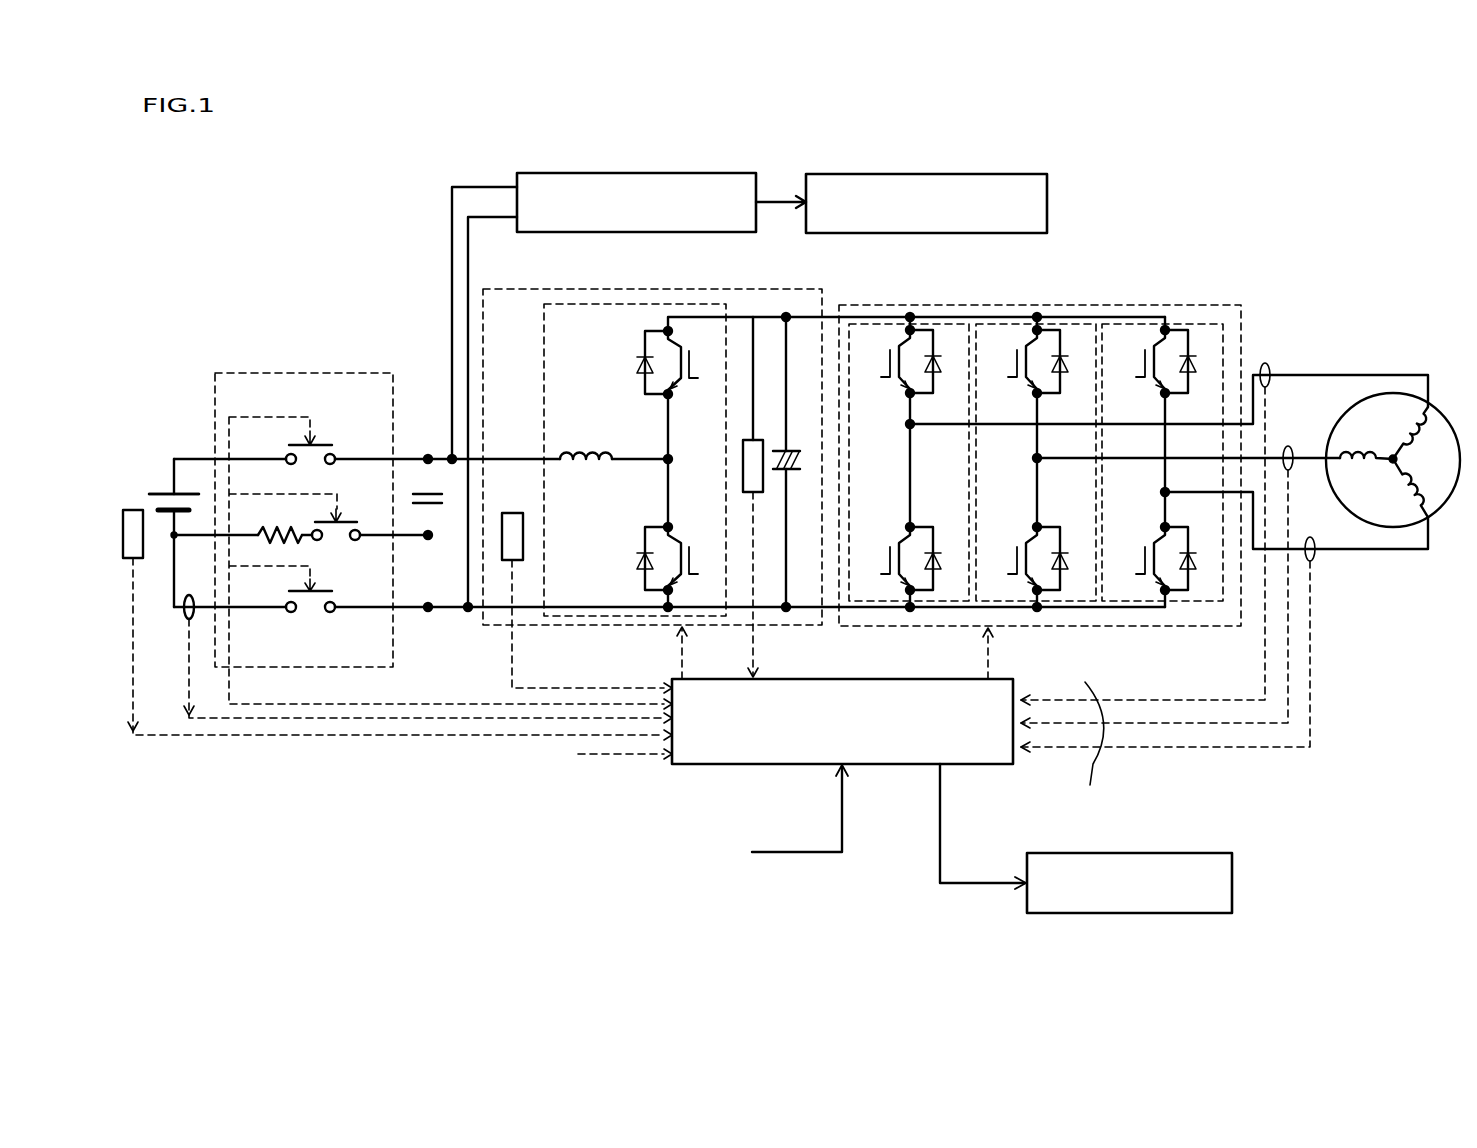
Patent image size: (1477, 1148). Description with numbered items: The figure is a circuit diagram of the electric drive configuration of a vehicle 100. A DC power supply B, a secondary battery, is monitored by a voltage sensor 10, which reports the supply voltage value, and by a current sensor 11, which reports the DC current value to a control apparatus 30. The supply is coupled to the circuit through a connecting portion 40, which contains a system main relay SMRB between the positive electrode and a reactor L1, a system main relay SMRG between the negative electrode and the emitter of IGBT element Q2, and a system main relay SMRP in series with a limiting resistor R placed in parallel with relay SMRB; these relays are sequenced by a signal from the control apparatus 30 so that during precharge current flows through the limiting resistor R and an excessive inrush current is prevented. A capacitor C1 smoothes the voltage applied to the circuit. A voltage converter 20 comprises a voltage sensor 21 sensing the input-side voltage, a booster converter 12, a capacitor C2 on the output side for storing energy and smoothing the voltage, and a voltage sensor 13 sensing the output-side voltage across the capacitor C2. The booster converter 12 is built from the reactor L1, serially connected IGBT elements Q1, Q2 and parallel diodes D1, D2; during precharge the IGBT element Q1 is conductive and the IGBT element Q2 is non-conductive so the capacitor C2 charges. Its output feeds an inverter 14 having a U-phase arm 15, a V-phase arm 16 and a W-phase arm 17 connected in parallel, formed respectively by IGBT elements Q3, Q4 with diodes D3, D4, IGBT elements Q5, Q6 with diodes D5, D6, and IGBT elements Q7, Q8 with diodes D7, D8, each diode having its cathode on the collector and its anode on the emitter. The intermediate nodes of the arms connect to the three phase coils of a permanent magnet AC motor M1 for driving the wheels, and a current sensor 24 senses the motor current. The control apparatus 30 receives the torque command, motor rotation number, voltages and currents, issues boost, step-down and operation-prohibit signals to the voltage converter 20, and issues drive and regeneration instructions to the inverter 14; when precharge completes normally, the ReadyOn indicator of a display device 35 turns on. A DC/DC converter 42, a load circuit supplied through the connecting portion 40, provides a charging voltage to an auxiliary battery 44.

The voltage sensor 10 is at (133, 510).
The current sensor 11 is at (189, 595).
The booster converter 12 is at (544, 337).
The voltage sensor 13 is at (753, 440).
The inverter 14 is at (873, 305).
The U-phase arm 15 is at (945, 324).
The V-phase arm 16 is at (1070, 324).
The W-phase arm 17 is at (1198, 324).
The voltage converter 20 is at (503, 289).
The voltage sensor 21 is at (512, 513).
The current sensor 24 is at (1265, 363).
The control apparatus 30 is at (752, 764).
The display device 35 is at (1200, 853).
The connecting portion 40 is at (283, 372).
The DC/DC converter 42 is at (704, 174).
The auxiliary battery 44 is at (992, 174).
The vehicle 100 is at (1294, 251).
The DC power supply B is at (157, 490).
The limiting resistor R is at (266, 531).
The system main relay SMRB is at (313, 440).
The system main relay SMRP is at (336, 542).
The system main relay SMRG is at (310, 614).
The capacitor C1 is at (440, 505).
The capacitor C2 is at (794, 449).
The reactor L1 is at (586, 440).
The IGBT element Q1 is at (695, 362).
The IGBT element Q2 is at (695, 558).
The IGBT element Q3 is at (883, 361).
The IGBT element Q4 is at (883, 558).
The IGBT element Q5 is at (1010, 361).
The IGBT element Q6 is at (1010, 558).
The IGBT element Q7 is at (1138, 361).
The IGBT element Q8 is at (1138, 558).
The diode D1 is at (632, 362).
The diode D2 is at (632, 558).
The diode D3 is at (938, 365).
The diode D4 is at (938, 562).
The diode D5 is at (1065, 365).
The diode D6 is at (1065, 562).
The diode D7 is at (1193, 365).
The diode D8 is at (1193, 562).
The AC motor M1 is at (1440, 410).